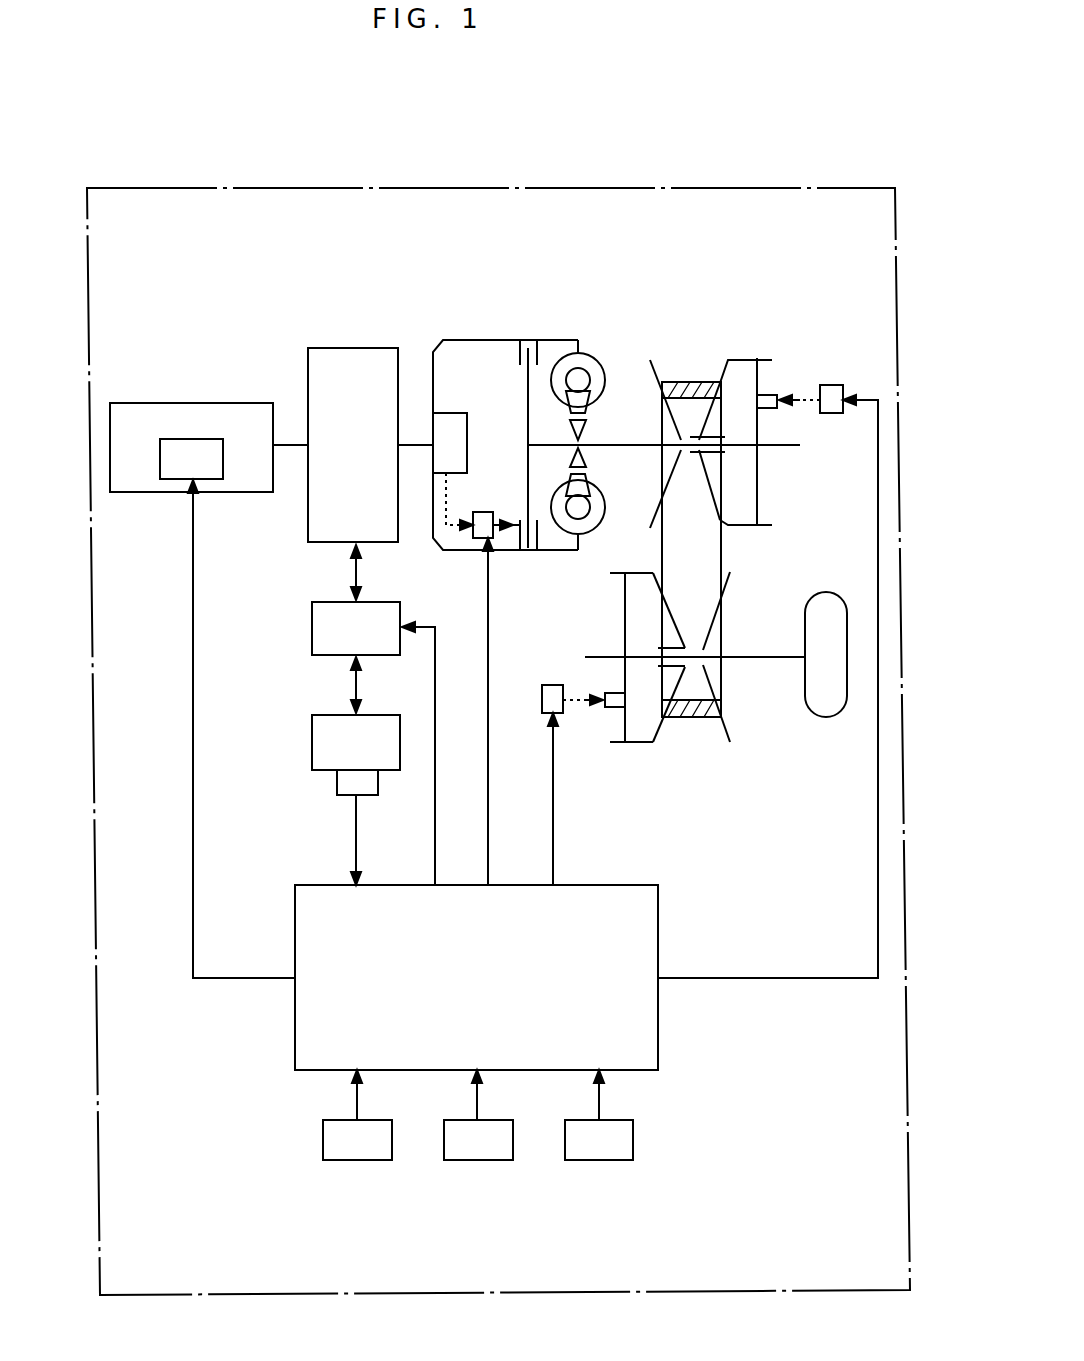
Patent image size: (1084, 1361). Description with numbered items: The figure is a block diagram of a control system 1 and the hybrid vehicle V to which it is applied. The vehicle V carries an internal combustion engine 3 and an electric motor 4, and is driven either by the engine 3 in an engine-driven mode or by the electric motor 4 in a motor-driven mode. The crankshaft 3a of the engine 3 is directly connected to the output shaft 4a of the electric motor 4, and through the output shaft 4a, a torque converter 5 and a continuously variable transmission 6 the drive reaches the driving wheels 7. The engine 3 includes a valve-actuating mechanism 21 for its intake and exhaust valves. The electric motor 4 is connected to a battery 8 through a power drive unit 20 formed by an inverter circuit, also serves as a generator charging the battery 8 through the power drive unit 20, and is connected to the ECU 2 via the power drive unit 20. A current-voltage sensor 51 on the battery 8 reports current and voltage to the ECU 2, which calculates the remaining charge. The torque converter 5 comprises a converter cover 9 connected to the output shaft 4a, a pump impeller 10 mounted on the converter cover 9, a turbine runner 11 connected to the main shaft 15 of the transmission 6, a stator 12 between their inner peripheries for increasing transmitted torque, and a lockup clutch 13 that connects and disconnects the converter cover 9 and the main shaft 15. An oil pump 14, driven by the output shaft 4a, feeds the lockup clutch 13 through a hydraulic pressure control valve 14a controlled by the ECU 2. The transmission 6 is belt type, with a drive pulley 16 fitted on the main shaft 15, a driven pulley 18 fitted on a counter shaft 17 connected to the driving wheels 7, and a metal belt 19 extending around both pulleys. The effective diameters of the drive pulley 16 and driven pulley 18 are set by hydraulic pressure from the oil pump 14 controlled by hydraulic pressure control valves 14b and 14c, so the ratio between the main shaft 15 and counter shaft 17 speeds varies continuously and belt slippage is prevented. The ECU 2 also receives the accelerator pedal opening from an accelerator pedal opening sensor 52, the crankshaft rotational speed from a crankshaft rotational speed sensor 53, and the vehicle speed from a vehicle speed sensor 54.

The vehicle V is at (656, 188).
The control system 1 is at (735, 1203).
The ECU 2 is at (658, 1030).
The internal combustion engine 3 is at (195, 403).
The crankshaft 3a is at (290, 450).
The electric motor 4 is at (330, 348).
The output shaft 4a is at (418, 450).
The torque converter 5 is at (526, 285).
The continuously variable transmission 6 is at (698, 330).
The driving wheels 7 is at (832, 590).
The battery 8 is at (312, 742).
The converter cover 9 is at (490, 338).
The pump impeller 10 is at (600, 357).
The turbine runner 11 is at (557, 340).
The stator 12 is at (590, 418).
The lockup clutch 13 is at (528, 480).
The oil pump 14 is at (463, 410).
The hydraulic pressure control valve 14a is at (495, 545).
The hydraulic pressure control valve 14b is at (830, 385).
The hydraulic pressure control valve 14c is at (550, 685).
The main shaft 15 is at (790, 448).
The drive pulley 16 is at (745, 352).
The counter shaft 17 is at (765, 660).
The driven pulley 18 is at (628, 750).
The metal belt 19 is at (721, 548).
The power drive unit 20 is at (312, 637).
The valve-actuating mechanism 21 is at (223, 470).
The current-voltage sensor 51 is at (337, 782).
The accelerator pedal opening sensor 52 is at (360, 1160).
The crankshaft rotational speed sensor 53 is at (482, 1160).
The vehicle speed sensor 54 is at (603, 1160).